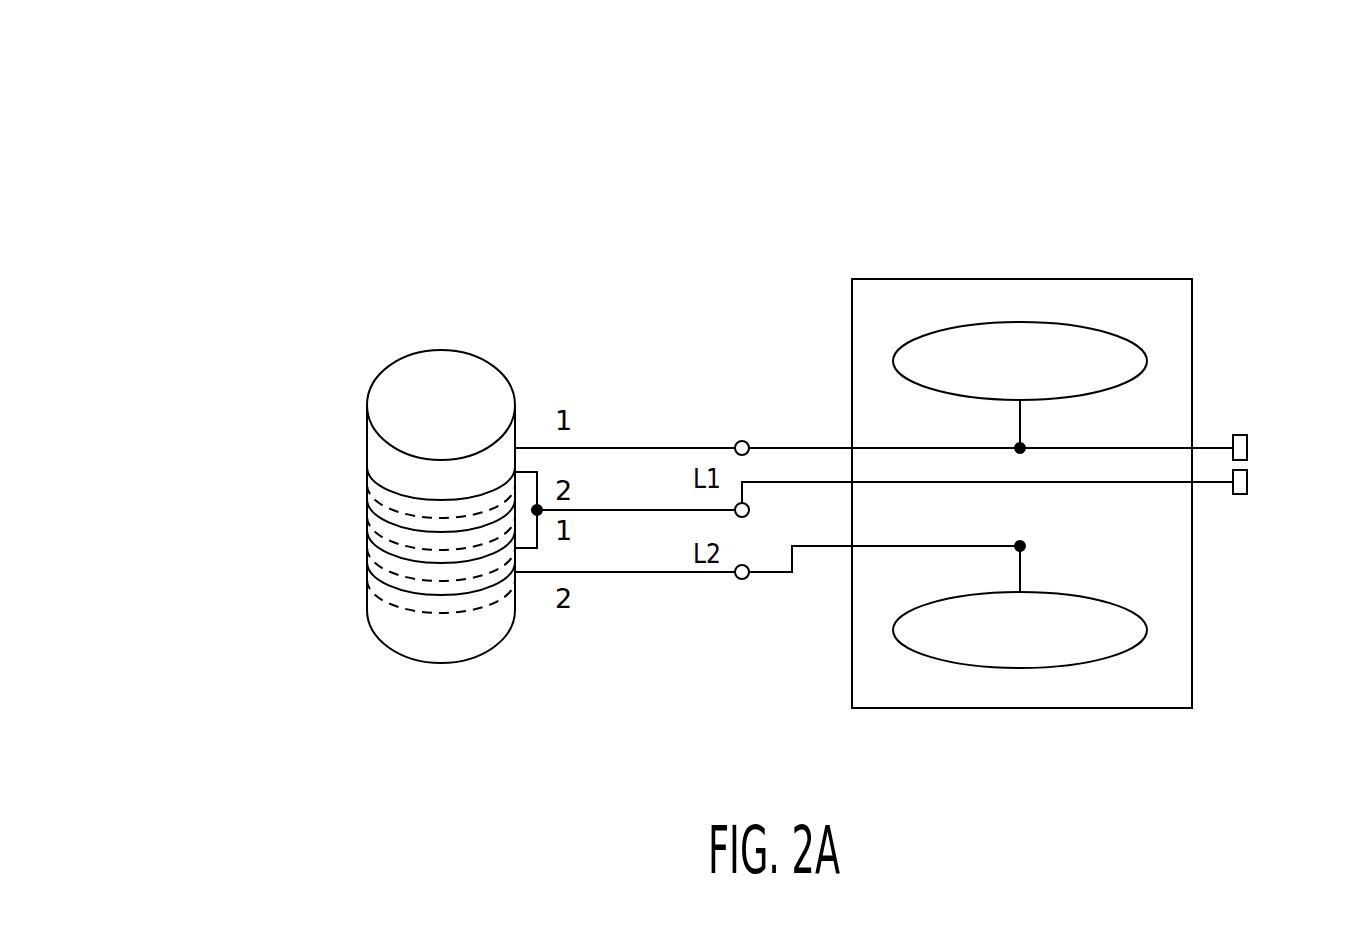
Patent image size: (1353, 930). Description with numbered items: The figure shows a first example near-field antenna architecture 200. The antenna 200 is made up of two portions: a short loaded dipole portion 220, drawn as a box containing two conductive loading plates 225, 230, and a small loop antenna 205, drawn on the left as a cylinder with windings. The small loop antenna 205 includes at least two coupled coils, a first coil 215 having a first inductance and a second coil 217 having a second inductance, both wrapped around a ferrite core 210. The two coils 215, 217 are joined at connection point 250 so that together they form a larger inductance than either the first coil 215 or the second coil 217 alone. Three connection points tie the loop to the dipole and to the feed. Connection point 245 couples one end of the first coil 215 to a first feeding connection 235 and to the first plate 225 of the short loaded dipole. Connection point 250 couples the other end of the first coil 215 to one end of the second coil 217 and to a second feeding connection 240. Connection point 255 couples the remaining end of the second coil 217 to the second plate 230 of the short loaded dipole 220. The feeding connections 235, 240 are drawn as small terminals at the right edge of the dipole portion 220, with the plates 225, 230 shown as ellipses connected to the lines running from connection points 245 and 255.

The near-field antenna architecture 200 is at (210, 153).
The small loop antenna 205 is at (406, 306).
The ferrite core 210 is at (383, 375).
The first coil 215 is at (384, 490).
The second coil 217 is at (398, 598).
The short loaded dipole portion 220 is at (928, 279).
The first conductive loading plate 225 is at (1132, 340).
The second conductive loading plate 230 is at (1146, 630).
The first feeding connection 235 is at (1247, 443).
The second feeding connection 240 is at (1247, 488).
The connection point 245 is at (742, 441).
The connection point 250 is at (749, 512).
The connection point 255 is at (742, 579).